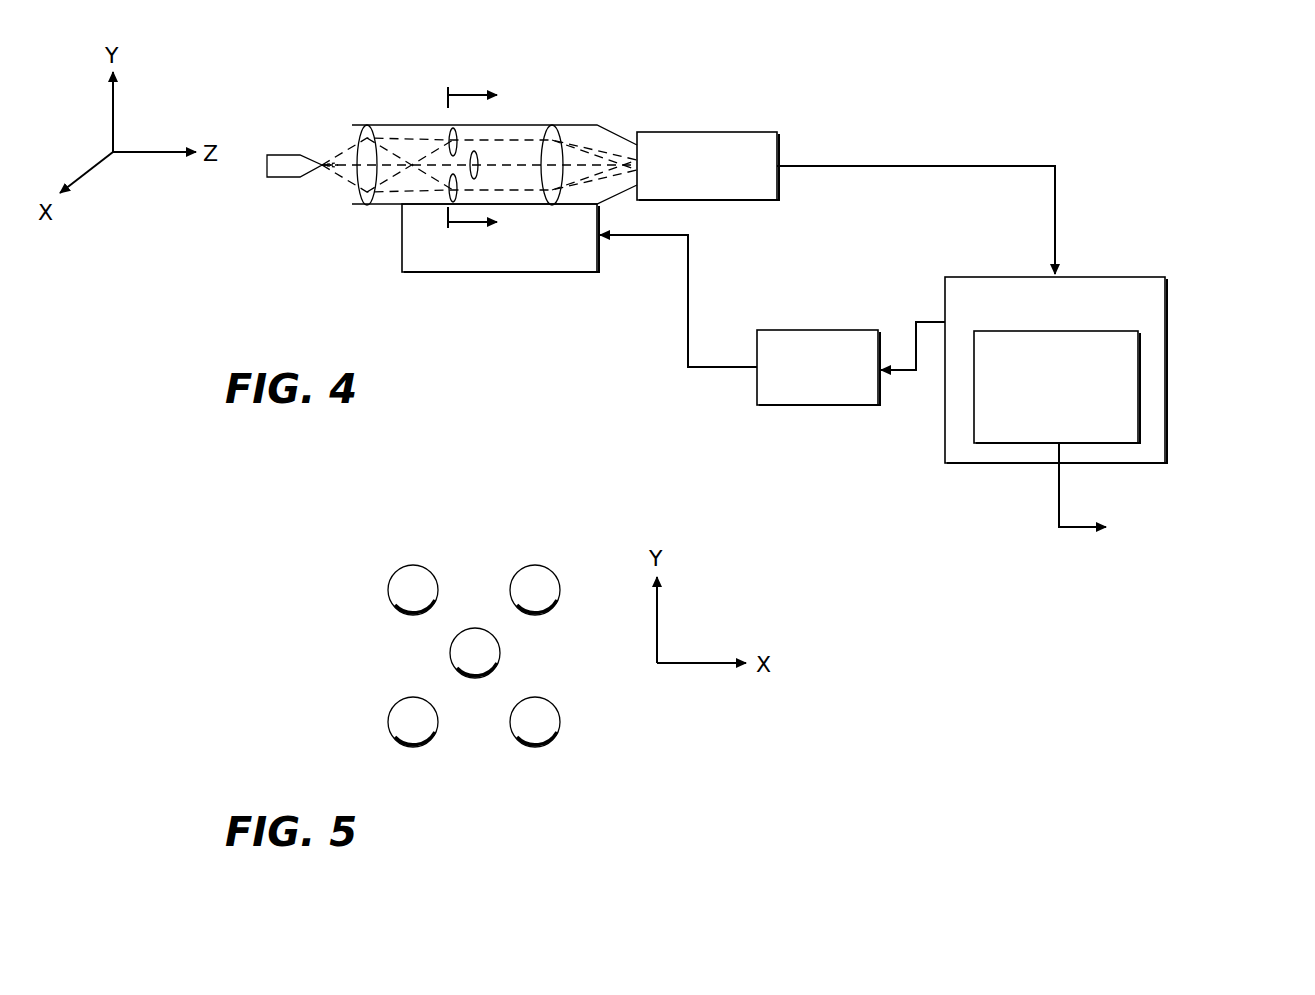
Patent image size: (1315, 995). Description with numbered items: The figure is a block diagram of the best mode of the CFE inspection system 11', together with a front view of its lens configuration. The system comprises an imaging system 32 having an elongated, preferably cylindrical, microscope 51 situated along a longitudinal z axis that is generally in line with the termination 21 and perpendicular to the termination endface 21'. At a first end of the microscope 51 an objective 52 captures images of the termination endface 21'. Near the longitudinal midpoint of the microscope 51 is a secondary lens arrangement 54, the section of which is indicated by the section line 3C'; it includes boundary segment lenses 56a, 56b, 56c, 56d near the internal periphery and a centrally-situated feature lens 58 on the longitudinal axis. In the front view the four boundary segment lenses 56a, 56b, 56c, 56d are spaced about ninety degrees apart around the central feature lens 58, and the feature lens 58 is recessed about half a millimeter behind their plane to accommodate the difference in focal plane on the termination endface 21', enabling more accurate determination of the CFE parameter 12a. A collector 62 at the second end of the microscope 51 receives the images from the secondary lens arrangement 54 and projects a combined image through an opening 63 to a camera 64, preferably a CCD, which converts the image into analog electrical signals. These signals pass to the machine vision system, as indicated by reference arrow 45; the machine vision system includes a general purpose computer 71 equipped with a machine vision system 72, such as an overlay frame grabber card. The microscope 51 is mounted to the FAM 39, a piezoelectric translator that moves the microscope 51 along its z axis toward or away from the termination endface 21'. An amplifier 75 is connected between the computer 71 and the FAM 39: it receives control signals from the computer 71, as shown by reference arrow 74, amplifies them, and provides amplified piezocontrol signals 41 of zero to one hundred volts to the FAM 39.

In FIG. 4, the CFE inspection system 11' is at (1063, 95).
In FIG. 4, the CFE parameter 12a is at (1080, 530).
In FIG. 4, the termination 21 is at (294, 133).
In FIG. 4, the termination endface 21' is at (336, 128).
In FIG. 4, the imaging system 32 is at (660, 62).
In FIG. 4, the FAM 39 is at (400, 250).
In FIG. 4, the amplified piezocontrol signals 41 is at (688, 297).
In FIG. 4, the reference arrow 45 is at (1057, 203).
In FIG. 4, the microscope 51 is at (572, 125).
In FIG. 4, the objective 52 is at (367, 145).
In FIG. 4, the secondary lens arrangement 54 is at (490, 70).
In FIG. 5, the boundary segment lens 56a is at (416, 575).
In FIG. 4, the boundary segment lens 56b is at (456, 130).
In FIG. 5, the boundary segment lens 56b is at (536, 577).
In FIG. 4, the boundary segment lens 56c is at (448, 185).
In FIG. 5, the boundary segment lens 56c is at (543, 735).
In FIG. 5, the boundary segment lens 56d is at (417, 735).
In FIG. 4, the feature lens 58 is at (478, 175).
In FIG. 5, the feature lens 58 is at (485, 652).
In FIG. 4, the collector 62 is at (557, 148).
In FIG. 4, the opening 63 is at (620, 142).
In FIG. 4, the camera 64 is at (777, 190).
In FIG. 4, the computer 71 is at (944, 297).
In FIG. 4, the machine vision system 72 is at (1140, 372).
In FIG. 4, the reference arrow 74 is at (908, 376).
In FIG. 4, the amplifier 75 is at (803, 330).
In FIG. 4, the section line 3C' is at (493, 151).